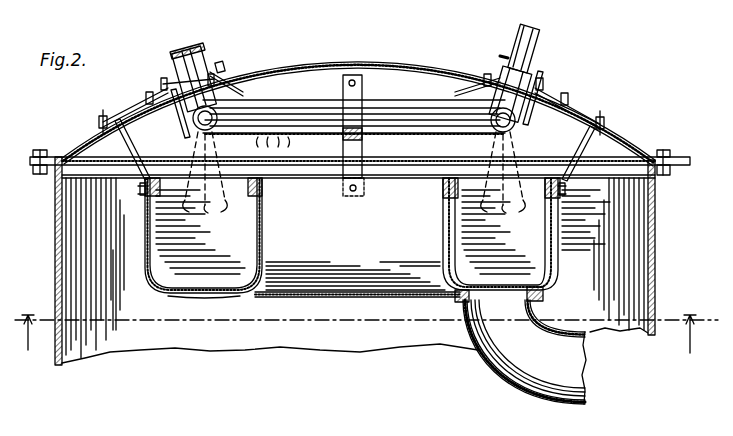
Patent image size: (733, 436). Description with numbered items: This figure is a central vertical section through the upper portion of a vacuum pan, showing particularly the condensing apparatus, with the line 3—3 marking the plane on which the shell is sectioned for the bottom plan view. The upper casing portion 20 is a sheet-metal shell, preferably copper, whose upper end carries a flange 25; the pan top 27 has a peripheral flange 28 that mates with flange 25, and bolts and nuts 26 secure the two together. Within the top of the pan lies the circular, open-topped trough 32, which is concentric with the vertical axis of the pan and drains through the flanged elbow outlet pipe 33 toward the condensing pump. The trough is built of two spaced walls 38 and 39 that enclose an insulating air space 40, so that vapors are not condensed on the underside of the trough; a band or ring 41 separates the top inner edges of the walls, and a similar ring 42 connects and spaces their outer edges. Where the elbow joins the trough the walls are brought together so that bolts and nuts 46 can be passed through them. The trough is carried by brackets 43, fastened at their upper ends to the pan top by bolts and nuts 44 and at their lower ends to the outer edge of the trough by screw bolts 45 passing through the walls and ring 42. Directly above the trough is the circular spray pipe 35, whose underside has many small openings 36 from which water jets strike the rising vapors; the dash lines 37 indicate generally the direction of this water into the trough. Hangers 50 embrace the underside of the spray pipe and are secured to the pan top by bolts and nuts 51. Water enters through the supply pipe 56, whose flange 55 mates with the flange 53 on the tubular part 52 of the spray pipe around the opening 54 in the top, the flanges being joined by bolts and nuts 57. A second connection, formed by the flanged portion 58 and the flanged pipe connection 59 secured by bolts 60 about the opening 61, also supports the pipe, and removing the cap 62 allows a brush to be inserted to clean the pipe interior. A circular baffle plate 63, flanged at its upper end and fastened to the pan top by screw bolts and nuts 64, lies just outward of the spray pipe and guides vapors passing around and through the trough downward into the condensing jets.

The section line 3— 3 is at (361, 335).
The upper casing portion 20 is at (656, 226).
The flange 25 is at (672, 170).
The bolts and nuts 26 is at (667, 152).
The pan top 27 is at (433, 70).
The flange 28 is at (680, 164).
The trough 32 is at (402, 278).
The outlet pipe 33 is at (570, 405).
The spray pipe 35 is at (292, 112).
The openings 36 is at (284, 146).
The dash lines 37 is at (355, 184).
The wall 38 is at (266, 256).
The wall 39 is at (252, 256).
The insulating air space 40 is at (196, 296).
The band or ring 41 is at (268, 186).
The ring 42 is at (150, 199).
The brackets 43 is at (133, 135).
The bolts and nuts 44 is at (101, 118).
The screw bolts 45 is at (140, 190).
The bolts and nuts 46 is at (457, 302).
The hangers 50 is at (366, 97).
The bolts and nuts 51 is at (357, 80).
The tubular part 52 is at (477, 89).
The flange 53 is at (488, 74).
The opening 54 is at (542, 84).
The flange 55 is at (503, 60).
The supply pipe 56 is at (545, 52).
The bolts and nuts 57 is at (548, 92).
The flanged portion 58 is at (242, 93).
The flanged pipe connection 59 is at (161, 84).
The bolts 60 is at (224, 66).
The opening 61 is at (203, 58).
The cap 62 is at (184, 48).
The baffle plate 63 is at (528, 131).
The screw bolts and nuts 64 is at (146, 97).